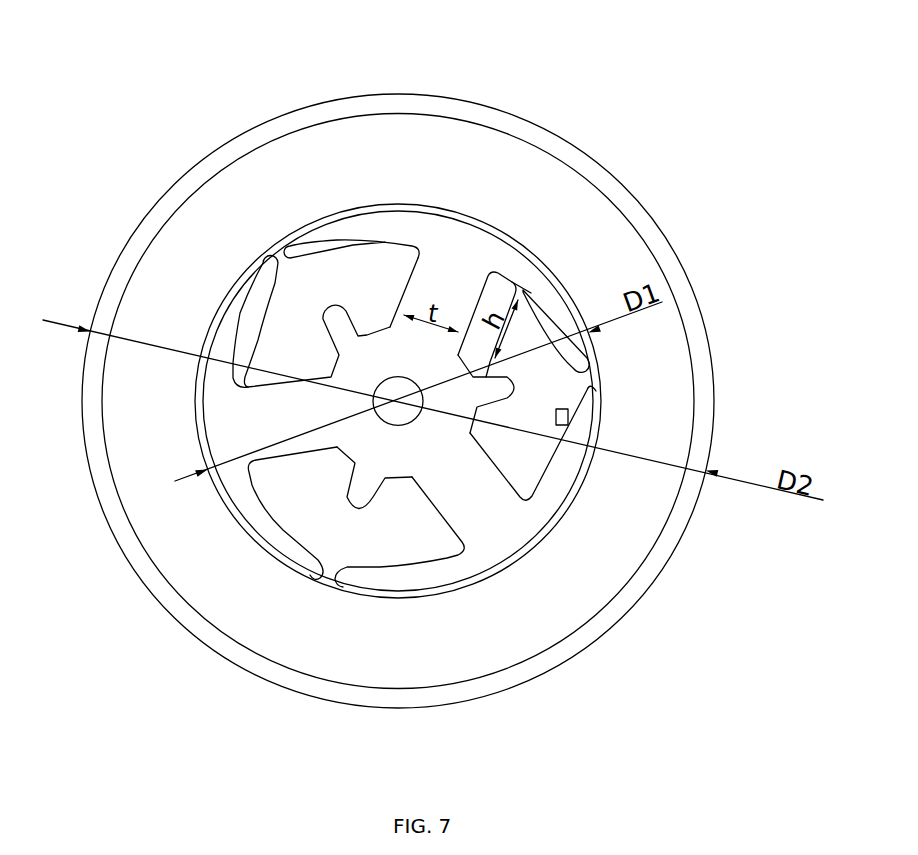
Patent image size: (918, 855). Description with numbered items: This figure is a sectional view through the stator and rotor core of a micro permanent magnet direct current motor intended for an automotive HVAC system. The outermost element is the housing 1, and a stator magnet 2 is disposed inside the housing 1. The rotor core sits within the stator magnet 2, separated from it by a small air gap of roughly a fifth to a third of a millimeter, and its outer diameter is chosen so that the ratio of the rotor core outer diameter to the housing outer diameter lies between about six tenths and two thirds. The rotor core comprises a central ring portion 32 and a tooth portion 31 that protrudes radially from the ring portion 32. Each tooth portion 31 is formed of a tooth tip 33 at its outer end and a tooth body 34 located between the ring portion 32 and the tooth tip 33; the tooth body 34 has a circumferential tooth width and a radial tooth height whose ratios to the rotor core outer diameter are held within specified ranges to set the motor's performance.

The housing 1 is at (552, 145).
The stator magnet 2 is at (590, 240).
The tooth portion 31 is at (316, 5).
The ring portion 32 is at (332, 351).
The tooth tip 33 is at (320, 237).
The tooth body 34 is at (427, 285).